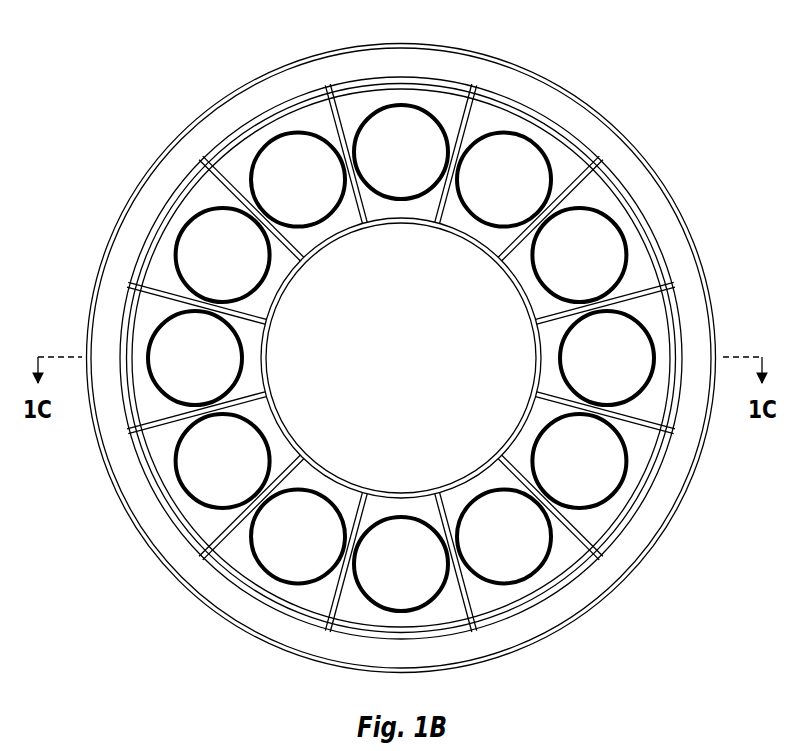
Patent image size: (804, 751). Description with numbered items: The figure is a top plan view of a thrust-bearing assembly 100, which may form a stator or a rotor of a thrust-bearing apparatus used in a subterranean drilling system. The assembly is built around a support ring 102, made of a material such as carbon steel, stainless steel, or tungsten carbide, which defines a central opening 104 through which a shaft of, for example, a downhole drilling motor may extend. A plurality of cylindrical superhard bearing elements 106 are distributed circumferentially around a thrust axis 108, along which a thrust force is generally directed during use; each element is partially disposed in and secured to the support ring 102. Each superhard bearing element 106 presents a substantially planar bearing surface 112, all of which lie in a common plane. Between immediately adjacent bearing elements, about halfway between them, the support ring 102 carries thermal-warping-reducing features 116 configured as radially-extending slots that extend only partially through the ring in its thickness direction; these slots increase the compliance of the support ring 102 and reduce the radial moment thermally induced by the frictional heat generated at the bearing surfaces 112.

The thrust-bearing assembly 100 is at (614, 31).
The support ring 102 is at (682, 462).
The opening 104 is at (417, 352).
The superhard bearing elements 106 is at (589, 524).
The thrust axis 108 is at (430, 358).
The bearing surface 112 is at (610, 473).
The thermal-warping-reducing features 116 is at (678, 279).